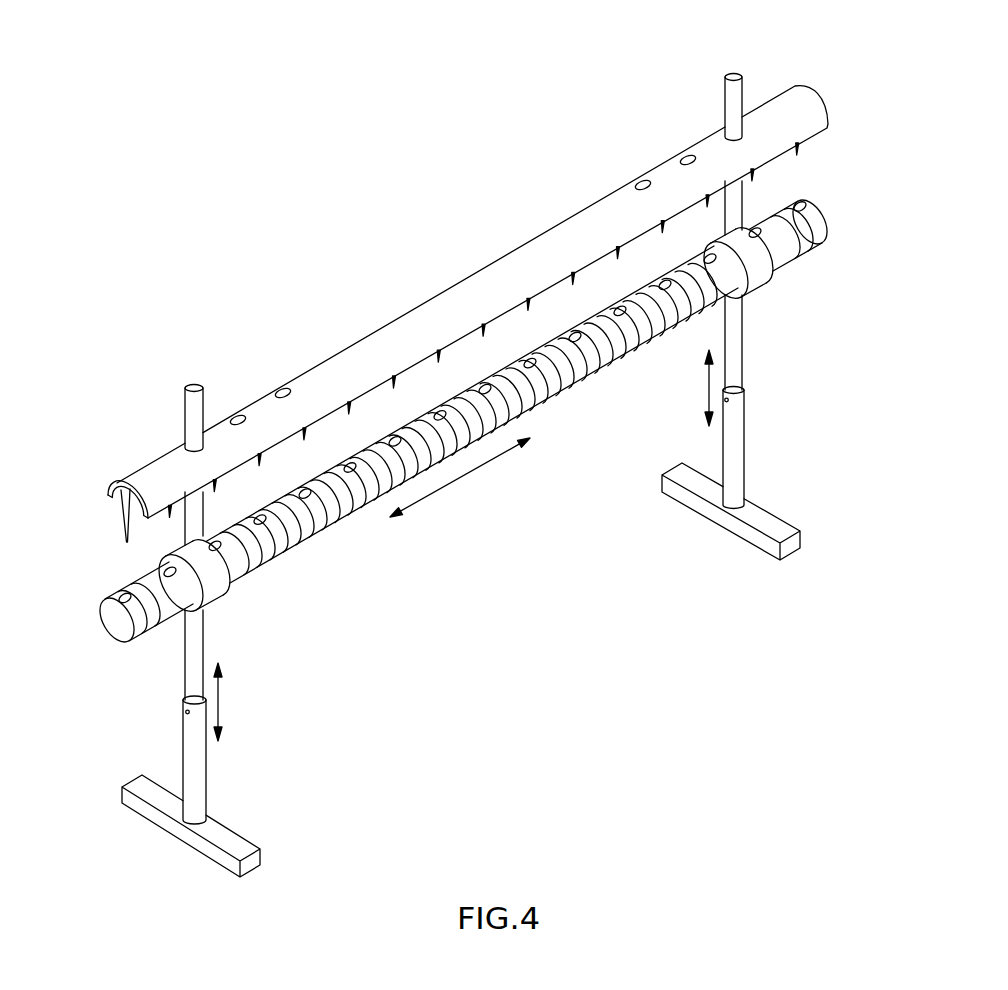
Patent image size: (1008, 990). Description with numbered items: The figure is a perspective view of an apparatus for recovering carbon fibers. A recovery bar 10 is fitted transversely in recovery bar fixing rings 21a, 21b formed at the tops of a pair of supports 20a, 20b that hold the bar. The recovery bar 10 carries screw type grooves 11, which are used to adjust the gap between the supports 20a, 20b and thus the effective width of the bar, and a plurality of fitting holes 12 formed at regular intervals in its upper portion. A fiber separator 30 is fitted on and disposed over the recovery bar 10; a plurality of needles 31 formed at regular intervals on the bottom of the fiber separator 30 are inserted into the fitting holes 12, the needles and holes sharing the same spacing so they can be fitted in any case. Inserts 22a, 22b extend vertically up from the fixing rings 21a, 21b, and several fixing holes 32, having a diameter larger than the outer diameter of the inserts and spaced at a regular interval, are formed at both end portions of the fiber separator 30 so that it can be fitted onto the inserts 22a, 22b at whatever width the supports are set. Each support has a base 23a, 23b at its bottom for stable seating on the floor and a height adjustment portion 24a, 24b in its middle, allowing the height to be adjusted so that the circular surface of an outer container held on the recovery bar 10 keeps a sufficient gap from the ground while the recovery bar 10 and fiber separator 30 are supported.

The recovery bar 10 is at (564, 394).
The screw type grooves 11 is at (265, 567).
The fitting holes 12 is at (320, 525).
The support 20a is at (202, 760).
The support 20b is at (738, 437).
The recovery bar fixing ring 21a is at (218, 595).
The recovery bar fixing ring 21b is at (760, 279).
The insert 22a is at (186, 388).
The insert 22b is at (728, 73).
The base 23a is at (243, 837).
The base 23b is at (778, 525).
The height adjustment portion 24a is at (190, 673).
The height adjustment portion 24b is at (738, 343).
The fiber separator 30 is at (373, 321).
The needles 31 is at (122, 511).
The fixing holes 32 is at (687, 157).